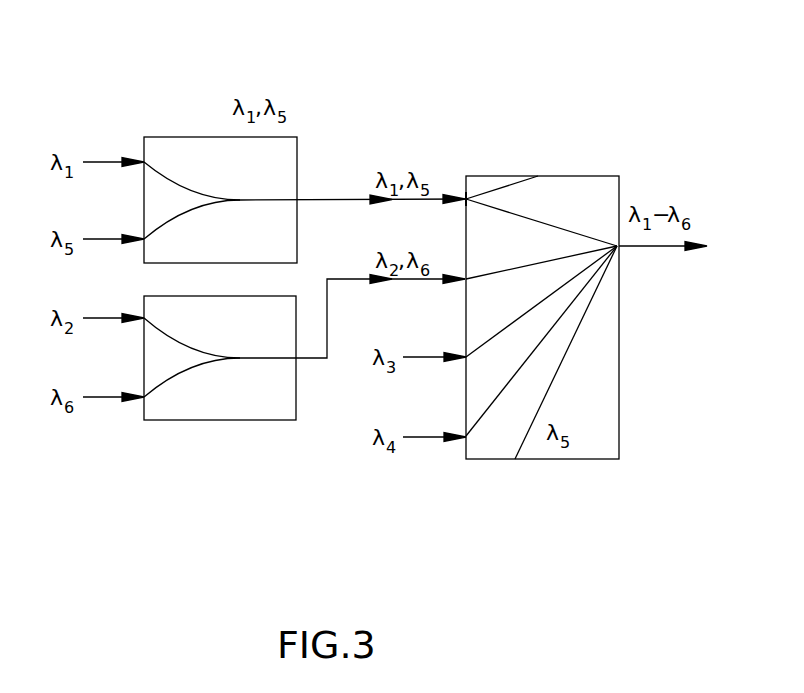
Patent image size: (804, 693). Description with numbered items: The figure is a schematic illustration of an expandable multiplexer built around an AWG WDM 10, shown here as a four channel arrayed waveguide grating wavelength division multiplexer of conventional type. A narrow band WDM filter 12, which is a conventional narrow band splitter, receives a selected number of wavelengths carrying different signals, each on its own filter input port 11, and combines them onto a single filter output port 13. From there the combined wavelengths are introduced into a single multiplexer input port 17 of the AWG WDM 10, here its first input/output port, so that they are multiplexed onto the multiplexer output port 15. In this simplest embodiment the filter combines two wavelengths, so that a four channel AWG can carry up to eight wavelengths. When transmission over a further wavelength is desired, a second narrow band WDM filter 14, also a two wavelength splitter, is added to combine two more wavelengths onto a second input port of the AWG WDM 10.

The AWG WDM 10 is at (484, 474).
The filter input port 11 is at (144, 162).
The narrow band WDM filter 12 is at (170, 137).
The filter output port 13 is at (300, 199).
The second narrow band WDM filter 14 is at (220, 420).
The multiplexer output port 15 is at (619, 249).
The multiplexer input port 17 is at (465, 198).